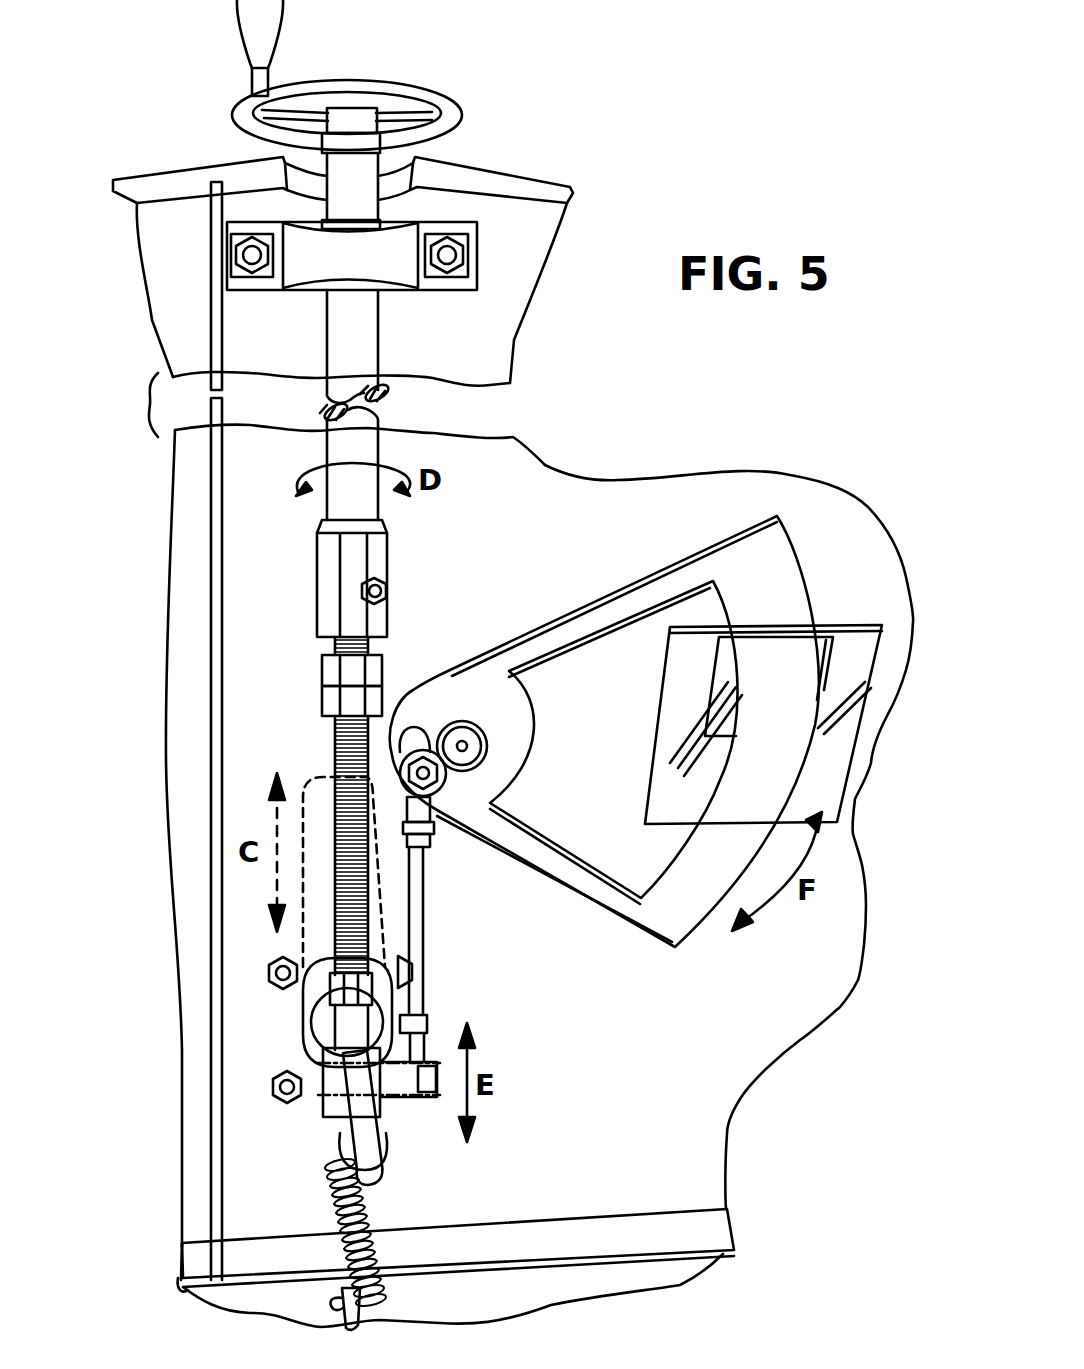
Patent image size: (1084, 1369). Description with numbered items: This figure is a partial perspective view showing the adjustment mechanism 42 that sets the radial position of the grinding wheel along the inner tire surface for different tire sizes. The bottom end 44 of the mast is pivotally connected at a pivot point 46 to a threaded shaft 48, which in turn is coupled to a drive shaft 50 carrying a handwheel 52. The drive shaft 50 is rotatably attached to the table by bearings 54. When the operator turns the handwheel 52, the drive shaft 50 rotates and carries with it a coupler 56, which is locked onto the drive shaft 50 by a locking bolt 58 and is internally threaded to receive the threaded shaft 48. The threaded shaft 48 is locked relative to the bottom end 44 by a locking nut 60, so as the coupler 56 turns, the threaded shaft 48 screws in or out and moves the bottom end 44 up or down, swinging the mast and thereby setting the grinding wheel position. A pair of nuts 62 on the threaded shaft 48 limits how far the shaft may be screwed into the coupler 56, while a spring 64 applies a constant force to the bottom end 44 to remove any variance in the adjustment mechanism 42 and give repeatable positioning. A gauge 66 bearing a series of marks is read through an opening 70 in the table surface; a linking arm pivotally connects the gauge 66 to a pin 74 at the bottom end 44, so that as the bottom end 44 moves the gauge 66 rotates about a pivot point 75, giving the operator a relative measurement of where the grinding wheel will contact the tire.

The adjustment mechanism 42 is at (560, 440).
The bottom end of mast 44 is at (362, 1172).
The pivot point 46 is at (325, 1096).
The threaded shaft 48 is at (343, 747).
The drive shaft 50 is at (347, 343).
The handwheel 52 is at (394, 97).
The bearings 54 is at (351, 258).
The coupler 56 is at (380, 553).
The locking bolt 58 is at (385, 593).
The locking nut 60 is at (324, 1012).
The pair of nuts 62 is at (375, 682).
The spring 64 is at (377, 1218).
The gauge 66 is at (784, 517).
The opening 70 is at (728, 679).
The pin 74 is at (388, 1083).
The pivot point 75 is at (470, 746).